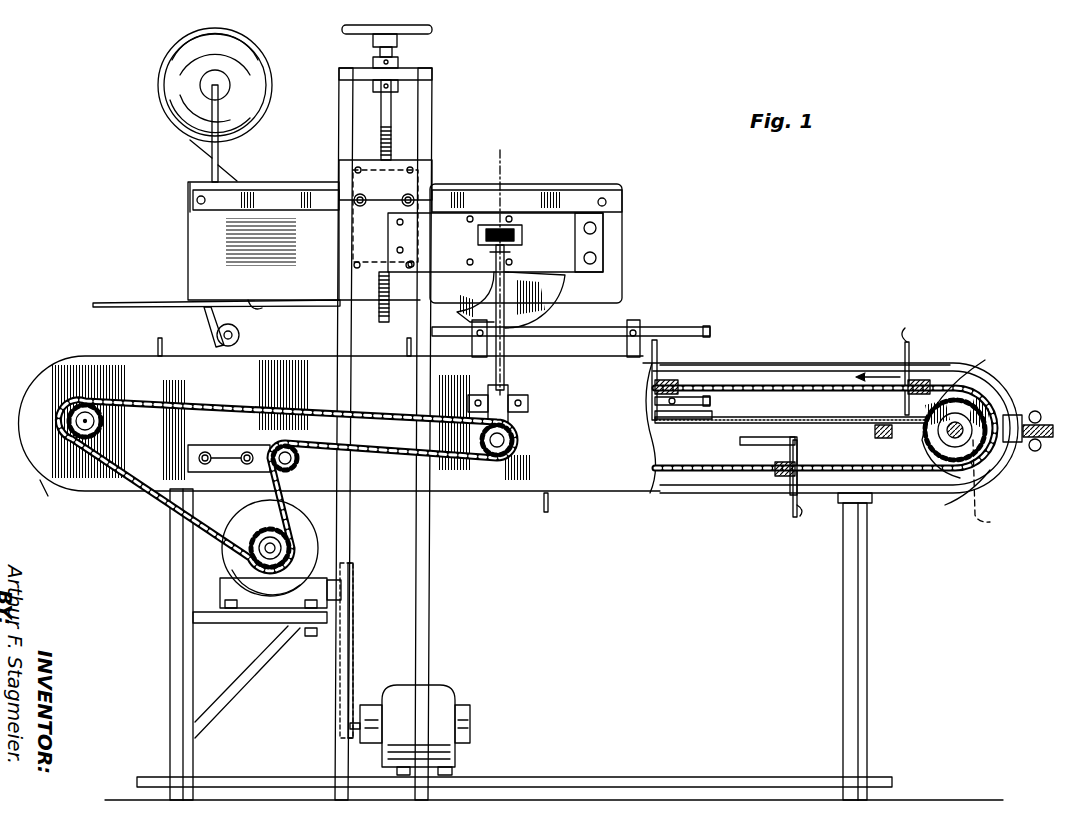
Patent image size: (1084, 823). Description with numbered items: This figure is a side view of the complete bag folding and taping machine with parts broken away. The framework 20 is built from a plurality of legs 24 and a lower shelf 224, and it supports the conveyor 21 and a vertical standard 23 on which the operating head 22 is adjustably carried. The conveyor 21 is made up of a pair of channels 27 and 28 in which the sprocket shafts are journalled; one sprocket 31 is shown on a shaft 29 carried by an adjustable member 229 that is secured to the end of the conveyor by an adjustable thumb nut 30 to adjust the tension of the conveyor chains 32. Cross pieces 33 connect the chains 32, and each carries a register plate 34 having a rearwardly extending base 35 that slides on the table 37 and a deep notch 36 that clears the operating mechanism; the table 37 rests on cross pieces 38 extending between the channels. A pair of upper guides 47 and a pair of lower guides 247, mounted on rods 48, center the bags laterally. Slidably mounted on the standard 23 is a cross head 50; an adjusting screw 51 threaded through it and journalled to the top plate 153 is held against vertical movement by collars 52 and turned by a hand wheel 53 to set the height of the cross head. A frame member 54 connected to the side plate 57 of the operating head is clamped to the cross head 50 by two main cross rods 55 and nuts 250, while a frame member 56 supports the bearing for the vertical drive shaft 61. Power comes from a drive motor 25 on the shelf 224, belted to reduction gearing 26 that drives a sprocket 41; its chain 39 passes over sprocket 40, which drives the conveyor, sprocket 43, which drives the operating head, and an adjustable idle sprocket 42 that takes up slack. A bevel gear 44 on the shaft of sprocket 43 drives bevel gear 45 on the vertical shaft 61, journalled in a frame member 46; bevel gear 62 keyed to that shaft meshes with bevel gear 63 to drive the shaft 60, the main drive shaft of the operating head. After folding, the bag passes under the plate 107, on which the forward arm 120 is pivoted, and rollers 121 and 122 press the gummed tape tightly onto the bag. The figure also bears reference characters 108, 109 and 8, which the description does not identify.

The framework 20 is at (840, 714).
The conveyor 21 is at (700, 496).
The operating head 22 is at (186, 243).
The vertical standard 23 is at (340, 112).
The legs 24 is at (172, 673).
The lower shelf 224 is at (615, 778).
The drive motor 25 is at (452, 692).
The reduction gearing 26 is at (220, 585).
The channel 27 is at (600, 492).
The channel 28 is at (772, 363).
The shaft 29 is at (946, 434).
The adjustable thumb nut 30 is at (1036, 411).
The sprocket 31 is at (958, 470).
The adjustable member 229 is at (1001, 486).
The chains 32 is at (806, 384).
The cross pieces 33 is at (670, 383).
The plate 34 is at (157, 345).
The rearwardly extending base 35 is at (945, 415).
The deep notch 36 is at (907, 342).
The table 37 is at (802, 423).
The cross pieces 38 is at (878, 438).
The lower guides 247 is at (712, 401).
The chain 39 is at (162, 504).
The sprocket 40 is at (100, 430).
The sprocket 41 is at (252, 532).
The idle sprocket 42 is at (295, 470).
The sprocket 43 is at (478, 437).
The bevel gear 44 is at (497, 460).
The bevel gear 45 is at (516, 432).
The frame member 46 is at (512, 396).
The upper guides 47 is at (672, 328).
The rods 48 is at (475, 336).
The cross head 50 is at (400, 160).
The adjusting screw 51 is at (392, 106).
The collars 52 is at (400, 63).
The hand wheel 53 is at (352, 32).
The top plate 153 is at (432, 75).
The frame member 54 is at (288, 196).
The main cross rods 55 is at (412, 197).
The nuts 250 is at (352, 228).
The frame member 56 is at (572, 242).
The side plate 57 is at (202, 215).
The shaft 60 is at (520, 258).
The vertical drive shaft 61 is at (506, 345).
The bevel gear 62 is at (512, 225).
The bevel gear 63 is at (480, 240).
The section line 8 is at (508, 160).
The top plate 107 is at (128, 303).
The tape reel 108 is at (160, 84).
The reel spindle 109 is at (197, 150).
The forward arm 120 is at (206, 318).
The roller 121 is at (262, 309).
The roller 122 is at (240, 335).